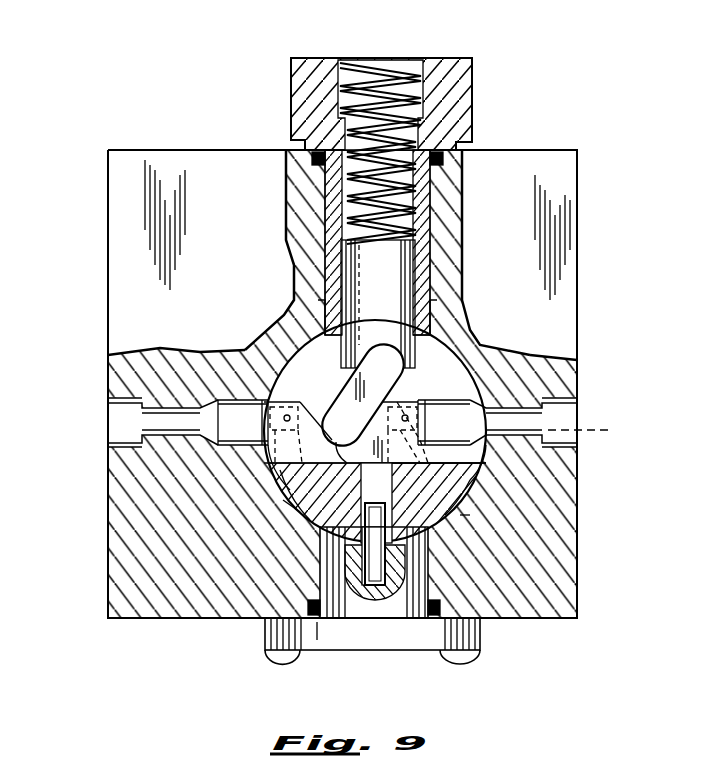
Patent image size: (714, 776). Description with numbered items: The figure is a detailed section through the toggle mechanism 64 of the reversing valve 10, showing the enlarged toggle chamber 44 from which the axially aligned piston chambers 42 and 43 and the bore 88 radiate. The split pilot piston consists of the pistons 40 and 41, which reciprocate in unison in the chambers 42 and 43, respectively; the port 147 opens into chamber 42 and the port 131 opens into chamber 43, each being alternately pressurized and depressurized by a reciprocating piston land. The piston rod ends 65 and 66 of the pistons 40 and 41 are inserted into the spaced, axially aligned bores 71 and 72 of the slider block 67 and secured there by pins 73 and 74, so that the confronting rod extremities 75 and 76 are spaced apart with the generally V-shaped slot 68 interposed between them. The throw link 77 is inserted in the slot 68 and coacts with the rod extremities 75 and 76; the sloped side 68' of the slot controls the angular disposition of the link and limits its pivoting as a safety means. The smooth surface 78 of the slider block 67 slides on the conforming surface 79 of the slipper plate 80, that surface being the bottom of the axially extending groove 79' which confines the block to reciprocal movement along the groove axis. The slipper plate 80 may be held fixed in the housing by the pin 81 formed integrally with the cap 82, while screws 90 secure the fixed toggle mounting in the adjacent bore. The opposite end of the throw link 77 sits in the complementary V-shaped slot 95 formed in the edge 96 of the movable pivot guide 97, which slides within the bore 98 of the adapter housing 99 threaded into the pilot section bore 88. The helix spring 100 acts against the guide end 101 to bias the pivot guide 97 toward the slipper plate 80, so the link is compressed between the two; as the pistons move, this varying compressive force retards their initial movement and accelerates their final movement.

The reversing valve 10 is at (549, 147).
The helix spring 100 is at (411, 58).
The bore 88 is at (291, 192).
The guide end 101 is at (291, 230).
The adapter housing 99 is at (438, 203).
The bore of adapter housing 98 is at (425, 229).
The pivot guide 97 is at (396, 289).
The edge of pivot guide 96 is at (418, 337).
The V shaped slot 95 is at (358, 350).
The piston chamber 43 is at (163, 355).
The port 131 is at (212, 355).
The toggle chamber 44 is at (490, 345).
The piston chamber 42 is at (540, 357).
The piston 41 is at (104, 408).
The piston 40 is at (581, 408).
The port 147 is at (599, 434).
The toggle mechanism 64 is at (298, 520).
The piston rod end 65 is at (375, 503).
The piston rod end 66 is at (265, 467).
The slider block 67 is at (283, 505).
The V shaped slot 68 is at (376, 503).
The side of slot 68' is at (364, 412).
The bore 71 is at (409, 419).
The bore 72 is at (262, 423).
The pin 73 is at (420, 410).
The pin 74 is at (287, 414).
The rod extremity 75 is at (341, 432).
The rod extremity 76 is at (439, 490).
The throw link 77 is at (321, 380).
The smooth surface 78 is at (283, 487).
The conforming surface 79 is at (504, 462).
The groove 79' is at (499, 493).
The slipper plate 80 is at (470, 515).
The pin 81 is at (370, 560).
The cap 82 is at (418, 592).
The screws 90 is at (272, 662).